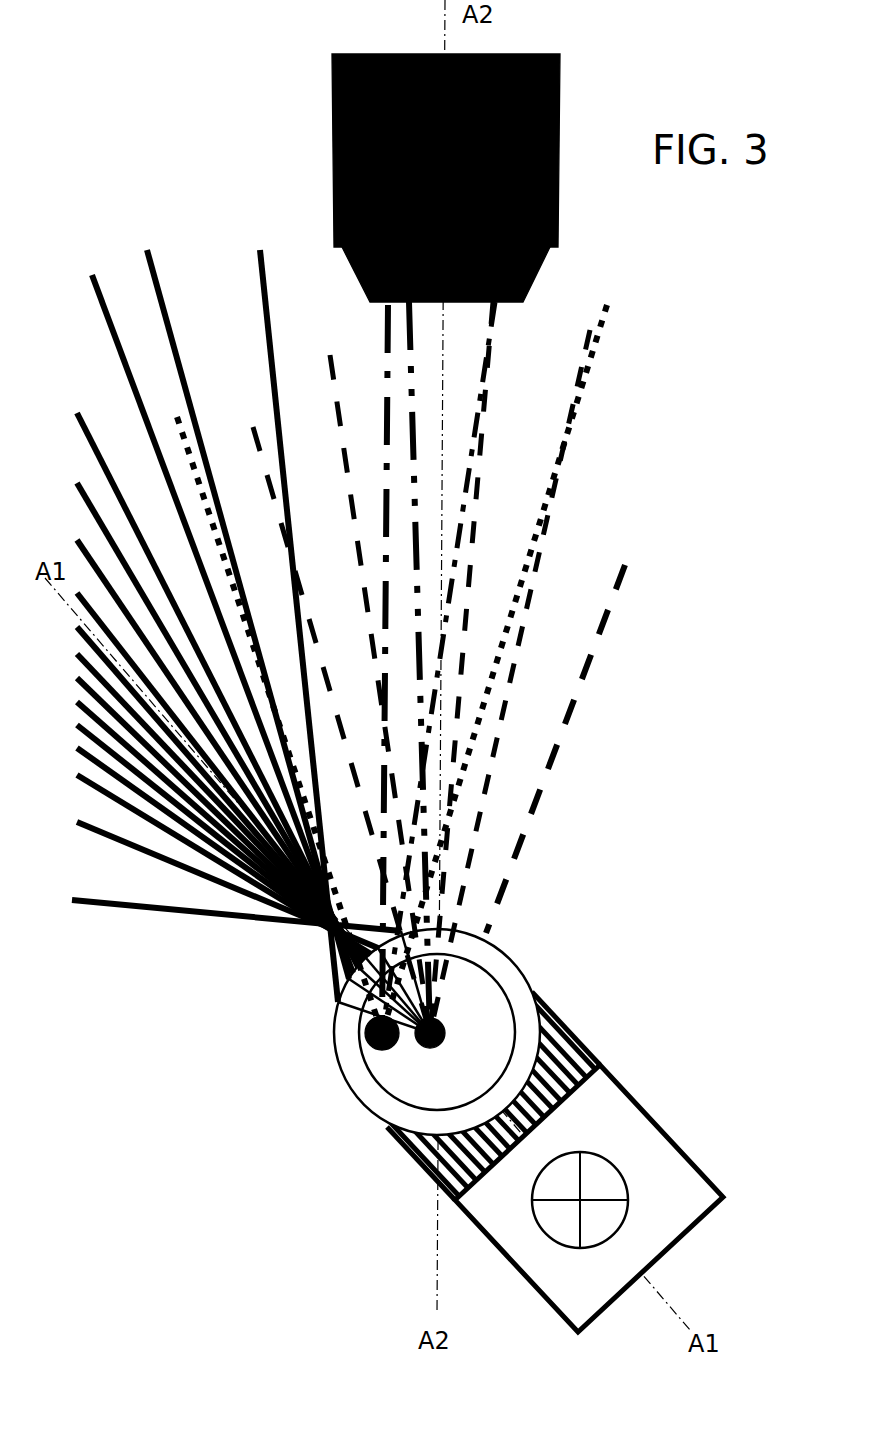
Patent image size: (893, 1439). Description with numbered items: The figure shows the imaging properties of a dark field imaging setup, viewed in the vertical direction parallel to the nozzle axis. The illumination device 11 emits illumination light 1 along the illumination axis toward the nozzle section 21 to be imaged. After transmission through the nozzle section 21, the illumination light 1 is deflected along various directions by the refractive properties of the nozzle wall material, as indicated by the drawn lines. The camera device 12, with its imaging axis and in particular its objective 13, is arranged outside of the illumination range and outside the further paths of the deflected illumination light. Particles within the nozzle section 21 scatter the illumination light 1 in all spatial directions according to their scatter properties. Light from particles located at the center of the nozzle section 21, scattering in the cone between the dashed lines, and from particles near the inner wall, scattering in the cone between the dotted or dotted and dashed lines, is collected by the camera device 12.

The illumination light 1 is at (458, 1187).
The illumination device 11 is at (588, 1290).
The camera device 12 is at (455, 184).
The objective 13 is at (446, 274).
The nozzle section 21 is at (419, 1082).